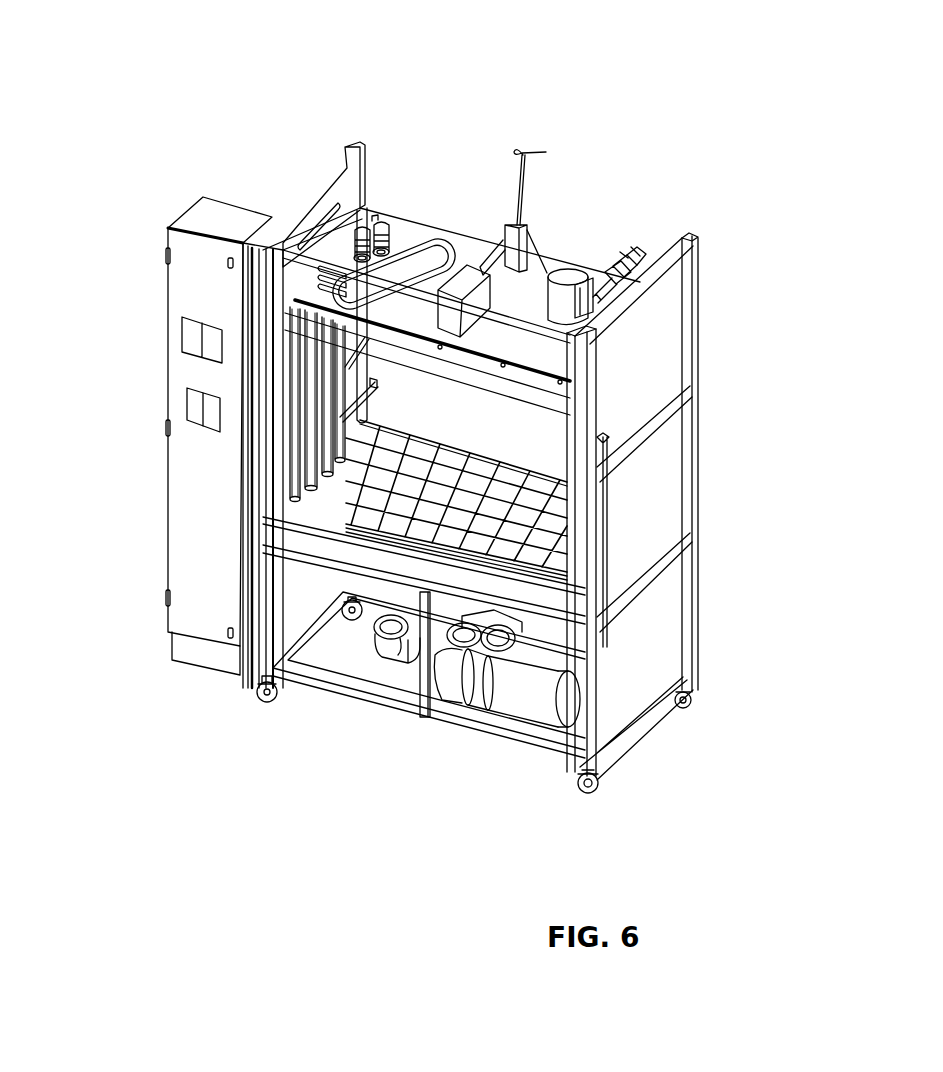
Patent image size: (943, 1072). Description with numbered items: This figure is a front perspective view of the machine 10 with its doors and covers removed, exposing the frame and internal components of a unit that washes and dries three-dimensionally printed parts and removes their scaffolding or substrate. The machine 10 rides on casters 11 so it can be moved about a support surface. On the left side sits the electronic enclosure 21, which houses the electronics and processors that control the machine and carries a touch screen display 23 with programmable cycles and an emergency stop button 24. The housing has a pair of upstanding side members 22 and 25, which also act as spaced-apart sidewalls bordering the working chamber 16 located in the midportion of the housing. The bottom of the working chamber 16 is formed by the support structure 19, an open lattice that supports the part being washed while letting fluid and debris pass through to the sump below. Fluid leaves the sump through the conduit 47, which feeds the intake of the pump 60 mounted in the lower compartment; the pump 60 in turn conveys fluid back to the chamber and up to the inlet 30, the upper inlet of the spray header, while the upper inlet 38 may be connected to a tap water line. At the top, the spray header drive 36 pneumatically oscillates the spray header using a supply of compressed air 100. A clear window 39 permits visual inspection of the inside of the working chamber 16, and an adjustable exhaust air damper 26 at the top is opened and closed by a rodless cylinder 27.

The machine 10 is at (184, 163).
The casters 11 is at (607, 777).
The working chamber 16 is at (497, 431).
The support structure 19 is at (422, 432).
The electronic enclosure 21 is at (186, 272).
The side member 22 is at (338, 183).
The touch screen display 23 is at (192, 337).
The emergency stop button 24 is at (193, 404).
The side member 25 is at (658, 327).
The adjustable exhaust air damper 26 is at (579, 270).
The rodless cylinder 27 is at (645, 250).
The inlet 30 is at (382, 222).
The spray header drive 36 is at (529, 228).
The upper inlet 38 is at (361, 226).
The clear window 39 is at (412, 254).
The conduit 47 is at (407, 655).
The pump 60 is at (528, 690).
The supply of compressed air 100 is at (543, 196).